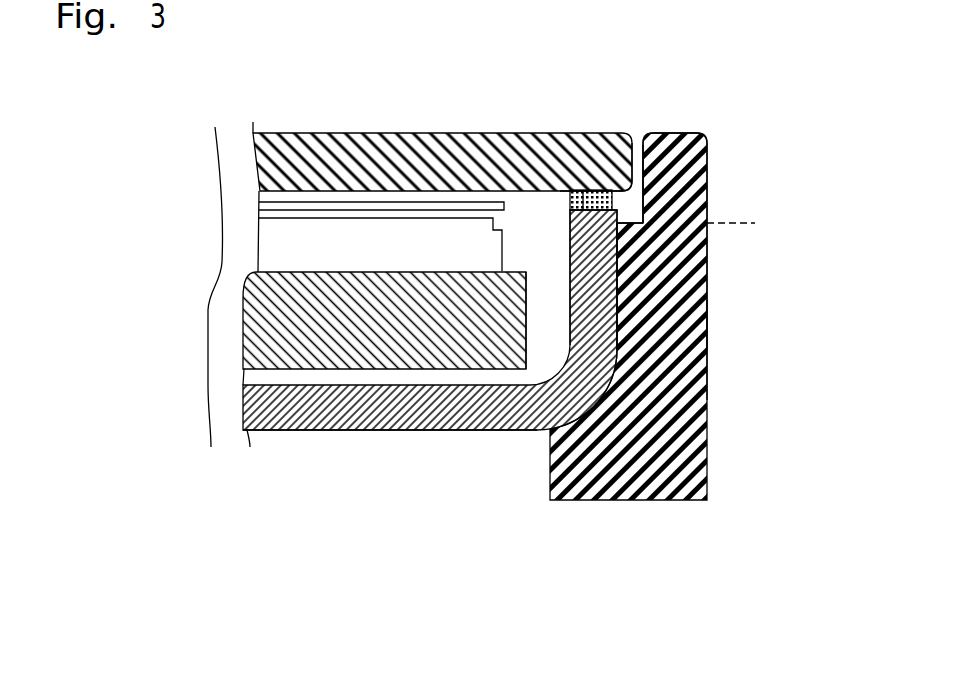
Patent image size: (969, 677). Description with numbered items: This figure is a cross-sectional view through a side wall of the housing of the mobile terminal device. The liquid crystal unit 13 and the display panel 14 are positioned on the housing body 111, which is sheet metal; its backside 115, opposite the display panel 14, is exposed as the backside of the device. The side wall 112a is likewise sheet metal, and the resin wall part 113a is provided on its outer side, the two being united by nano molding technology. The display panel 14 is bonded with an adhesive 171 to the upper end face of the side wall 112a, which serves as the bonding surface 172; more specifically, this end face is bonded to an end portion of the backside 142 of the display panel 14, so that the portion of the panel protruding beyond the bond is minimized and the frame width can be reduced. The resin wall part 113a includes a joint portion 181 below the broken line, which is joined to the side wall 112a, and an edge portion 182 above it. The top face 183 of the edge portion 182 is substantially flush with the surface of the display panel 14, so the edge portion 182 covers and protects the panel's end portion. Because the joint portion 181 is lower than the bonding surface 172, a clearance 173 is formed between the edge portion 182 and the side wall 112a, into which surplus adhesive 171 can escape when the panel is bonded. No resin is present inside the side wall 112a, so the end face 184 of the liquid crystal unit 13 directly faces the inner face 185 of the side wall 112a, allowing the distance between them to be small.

The liquid crystal unit 13 is at (257, 333).
The display panel 14 is at (318, 133).
The backside of the display panel 142 is at (598, 190).
The bonding surface 172 is at (524, 208).
The adhesive 171 is at (598, 190).
The clearance 173 is at (640, 212).
The joint portion 181 is at (693, 391).
The edge portion 182 is at (687, 180).
The top face of the edge portion 183 is at (682, 133).
The side wall 112a is at (617, 277).
The resin wall part 113a is at (713, 337).
The housing body 111 is at (347, 410).
The inner face of the side wall 185 is at (570, 300).
The backside of the housing body 115 is at (440, 430).
The end face of the liquid crystal unit 184 is at (527, 297).